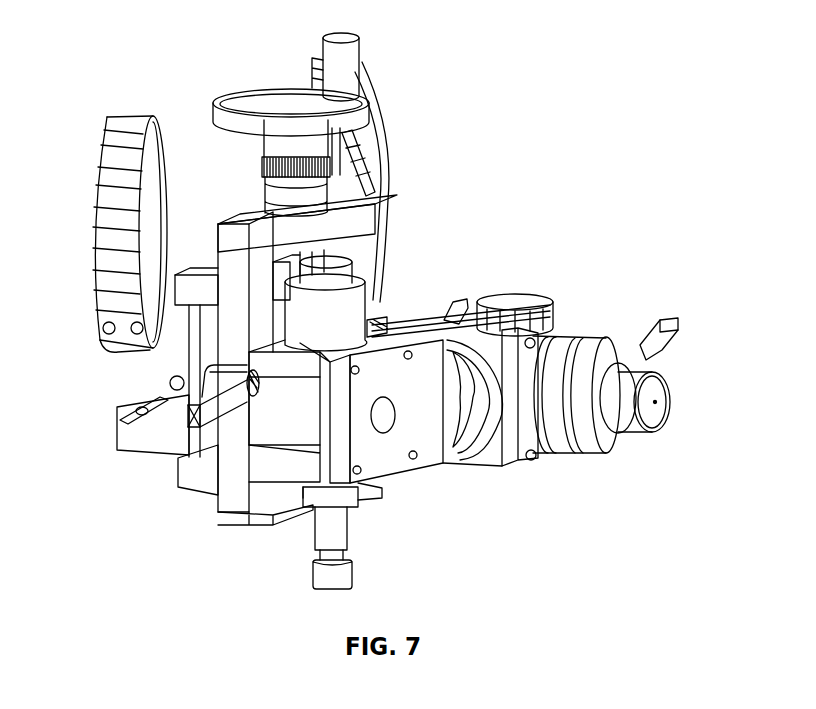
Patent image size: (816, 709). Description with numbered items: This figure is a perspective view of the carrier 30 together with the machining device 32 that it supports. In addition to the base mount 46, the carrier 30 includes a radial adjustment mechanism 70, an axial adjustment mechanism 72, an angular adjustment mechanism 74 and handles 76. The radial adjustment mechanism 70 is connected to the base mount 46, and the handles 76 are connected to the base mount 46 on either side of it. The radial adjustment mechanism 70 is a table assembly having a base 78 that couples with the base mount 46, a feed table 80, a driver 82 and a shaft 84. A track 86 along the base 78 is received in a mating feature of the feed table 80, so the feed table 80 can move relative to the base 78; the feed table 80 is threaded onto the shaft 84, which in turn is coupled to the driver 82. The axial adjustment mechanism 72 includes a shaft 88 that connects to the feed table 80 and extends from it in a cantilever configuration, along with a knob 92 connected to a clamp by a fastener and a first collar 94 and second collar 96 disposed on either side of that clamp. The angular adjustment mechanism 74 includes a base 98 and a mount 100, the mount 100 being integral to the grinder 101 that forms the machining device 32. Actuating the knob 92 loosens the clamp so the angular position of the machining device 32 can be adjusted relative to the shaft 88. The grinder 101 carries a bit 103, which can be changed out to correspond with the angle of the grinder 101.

The carrier 30 is at (550, 76).
The machining device 32 is at (362, 307).
The base mount 46 is at (120, 418).
The radial adjustment mechanism 70 is at (263, 90).
The axial adjustment mechanism 72 is at (606, 330).
The angular adjustment mechanism 74 is at (552, 293).
The handles 76 is at (110, 210).
The base 78 is at (236, 228).
The feed table 80 is at (210, 342).
The driver 82 is at (347, 57).
The shaft 84 is at (313, 252).
The track 86 is at (268, 276).
The shaft 88 is at (659, 405).
The knob 92 is at (512, 302).
The first collar 94 is at (647, 362).
The second collar 96 is at (457, 310).
The base 98 is at (370, 450).
The mount 100 is at (497, 413).
The grinder 101 is at (306, 591).
The bit 103 is at (343, 570).